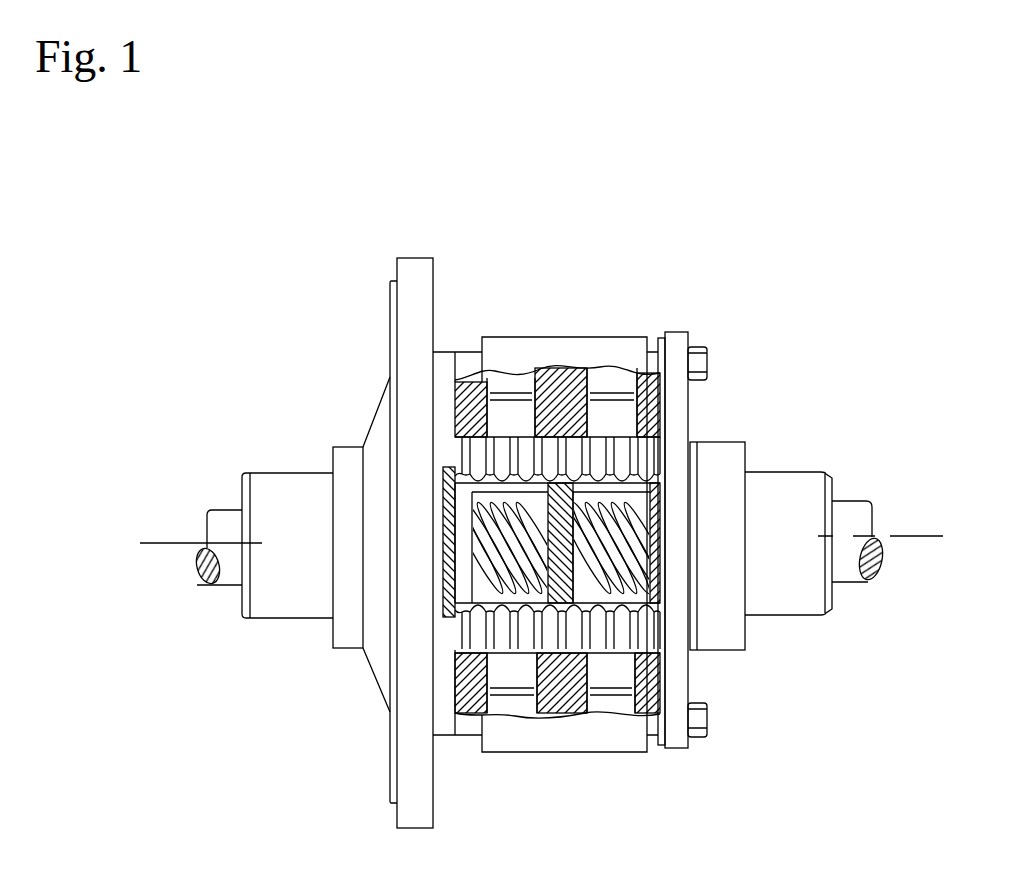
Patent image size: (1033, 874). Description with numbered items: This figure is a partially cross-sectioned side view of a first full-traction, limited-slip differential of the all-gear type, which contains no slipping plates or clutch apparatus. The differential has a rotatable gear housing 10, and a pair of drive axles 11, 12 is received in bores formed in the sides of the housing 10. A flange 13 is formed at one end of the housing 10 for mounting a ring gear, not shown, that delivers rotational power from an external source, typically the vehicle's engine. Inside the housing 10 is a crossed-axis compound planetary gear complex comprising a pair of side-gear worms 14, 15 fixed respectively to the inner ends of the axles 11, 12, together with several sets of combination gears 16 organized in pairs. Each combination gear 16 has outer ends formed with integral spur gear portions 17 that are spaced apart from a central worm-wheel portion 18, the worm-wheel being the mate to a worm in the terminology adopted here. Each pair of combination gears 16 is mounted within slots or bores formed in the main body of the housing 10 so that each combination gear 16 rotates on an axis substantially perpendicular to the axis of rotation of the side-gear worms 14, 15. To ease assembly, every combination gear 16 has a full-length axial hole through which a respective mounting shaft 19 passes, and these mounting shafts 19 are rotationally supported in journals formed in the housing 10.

The gear housing 10 is at (615, 352).
The drive axle 11 is at (215, 510).
The drive axle 12 is at (847, 515).
The flange 13 is at (433, 290).
The side-gear worm 14 is at (443, 540).
The side-gear worm 15 is at (662, 555).
The combination gears 16 is at (622, 612).
The spur gear portions 17 is at (662, 455).
The worm-wheel portion 18 is at (662, 502).
The mounting shaft 19 is at (512, 418).